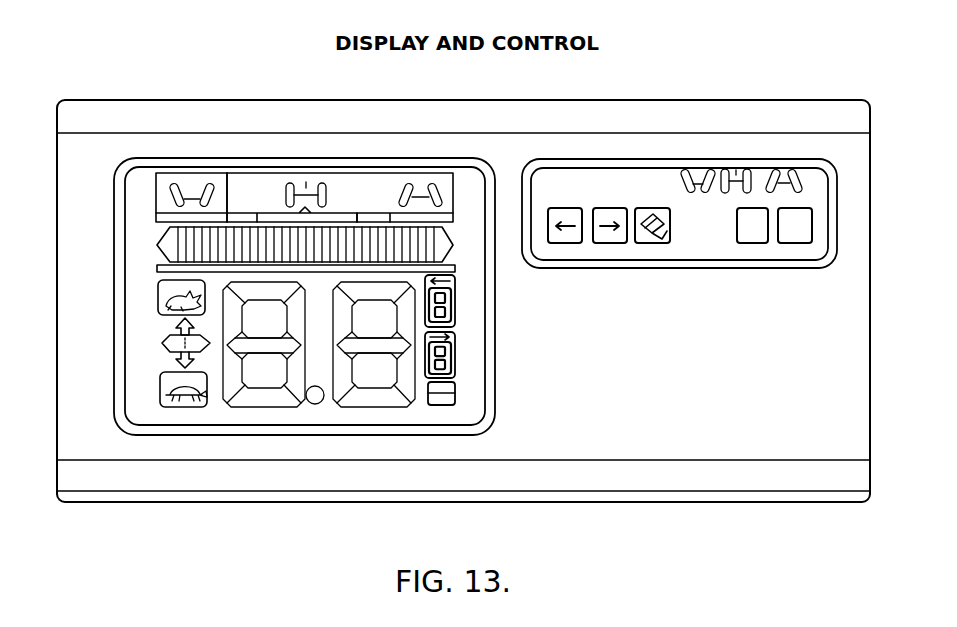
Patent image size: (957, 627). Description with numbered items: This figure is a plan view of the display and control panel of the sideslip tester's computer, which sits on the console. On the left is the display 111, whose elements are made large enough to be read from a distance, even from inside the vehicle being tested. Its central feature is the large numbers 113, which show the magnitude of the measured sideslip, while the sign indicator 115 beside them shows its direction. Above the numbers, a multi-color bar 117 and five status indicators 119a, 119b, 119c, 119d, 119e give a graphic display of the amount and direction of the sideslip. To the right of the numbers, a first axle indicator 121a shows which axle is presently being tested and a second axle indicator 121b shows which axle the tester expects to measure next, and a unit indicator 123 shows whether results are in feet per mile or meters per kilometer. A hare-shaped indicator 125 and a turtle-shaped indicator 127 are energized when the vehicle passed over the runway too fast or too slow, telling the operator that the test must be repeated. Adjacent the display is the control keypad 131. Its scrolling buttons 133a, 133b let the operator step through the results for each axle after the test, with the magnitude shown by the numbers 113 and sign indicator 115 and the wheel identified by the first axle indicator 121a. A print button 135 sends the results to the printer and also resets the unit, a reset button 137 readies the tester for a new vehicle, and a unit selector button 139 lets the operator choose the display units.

The display 111 is at (117, 211).
The large numbers 113 is at (378, 407).
The sign indicator 115 is at (162, 348).
The multi-color bar 117 is at (157, 245).
The status indicator 119a is at (165, 217).
The status indicator 119b is at (230, 217).
The status indicator 119c is at (277, 215).
The status indicator 119d is at (365, 215).
The status indicator 119e is at (445, 215).
The first axle indicator 121a is at (457, 310).
The second axle indicator 121b is at (457, 350).
The unit indicator 123 is at (458, 392).
The indicator (hare) 125 is at (158, 298).
The indicator (turtle) 127 is at (160, 388).
The control keypad 131 is at (761, 152).
The scrolling button 133a is at (555, 243).
The scrolling button 133b is at (617, 243).
The print button 135 is at (655, 243).
The reset button 137 is at (790, 243).
The unit selector button 139 is at (742, 243).